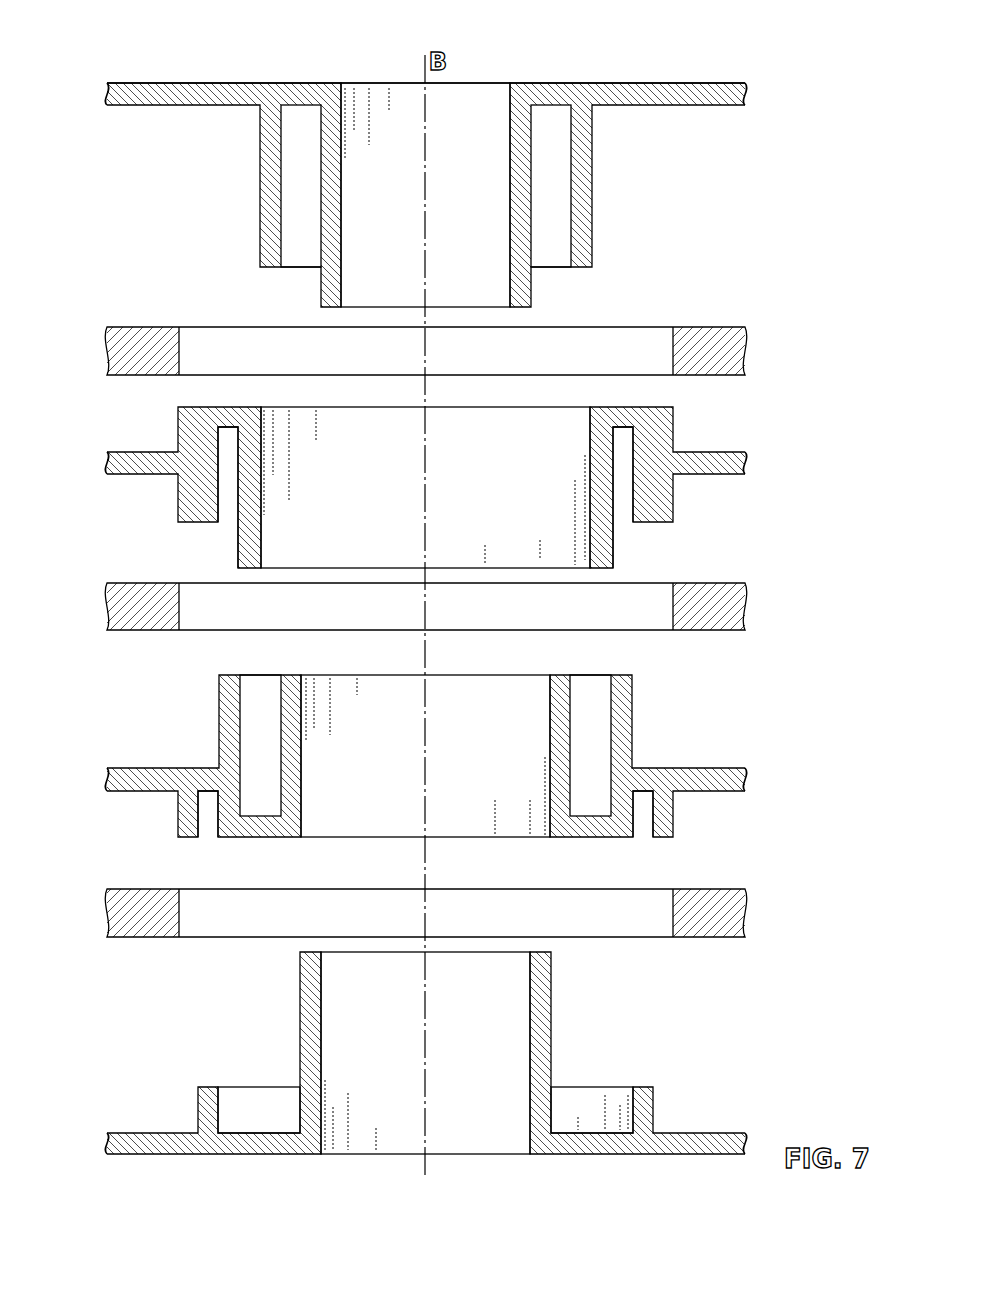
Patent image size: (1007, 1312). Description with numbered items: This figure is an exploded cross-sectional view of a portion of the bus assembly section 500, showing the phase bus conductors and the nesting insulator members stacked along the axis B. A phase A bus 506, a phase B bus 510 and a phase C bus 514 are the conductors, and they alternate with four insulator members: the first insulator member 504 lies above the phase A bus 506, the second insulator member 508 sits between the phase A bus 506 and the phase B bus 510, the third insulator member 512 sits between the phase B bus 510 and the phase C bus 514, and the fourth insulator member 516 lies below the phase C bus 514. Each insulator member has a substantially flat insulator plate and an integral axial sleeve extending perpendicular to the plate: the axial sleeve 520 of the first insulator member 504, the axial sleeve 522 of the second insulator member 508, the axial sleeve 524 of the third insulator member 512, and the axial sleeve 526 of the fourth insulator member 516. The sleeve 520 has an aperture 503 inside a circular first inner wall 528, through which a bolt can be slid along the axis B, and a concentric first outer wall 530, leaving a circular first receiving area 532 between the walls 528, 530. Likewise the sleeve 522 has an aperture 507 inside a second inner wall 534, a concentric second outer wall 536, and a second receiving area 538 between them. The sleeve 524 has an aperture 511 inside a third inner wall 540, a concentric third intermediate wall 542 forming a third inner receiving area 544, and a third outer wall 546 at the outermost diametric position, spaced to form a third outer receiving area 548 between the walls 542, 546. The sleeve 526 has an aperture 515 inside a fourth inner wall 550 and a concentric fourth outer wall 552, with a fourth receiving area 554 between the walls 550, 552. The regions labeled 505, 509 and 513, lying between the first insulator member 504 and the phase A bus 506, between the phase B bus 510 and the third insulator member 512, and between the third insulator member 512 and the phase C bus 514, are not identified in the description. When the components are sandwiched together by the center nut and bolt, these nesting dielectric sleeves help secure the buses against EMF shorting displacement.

The bus assembly section 500 is at (130, 46).
The aperture 503 is at (460, 108).
The first insulator member 504 is at (740, 93).
The gap 505 is at (622, 345).
The phase A bus 506 is at (740, 350).
The aperture 507 is at (462, 481).
The second insulator member 508 is at (742, 462).
The gap 509 is at (380, 615).
The phase B bus 510 is at (735, 603).
The aperture 511 is at (462, 771).
The third insulator member 512 is at (732, 778).
The gap 513 is at (357, 903).
The phase C bus 514 is at (710, 920).
The aperture 515 is at (462, 1091).
The fourth insulator member 516 is at (700, 1142).
The axial sleeve 520 is at (257, 163).
The axial sleeve 522 is at (168, 422).
The axial sleeve 524 is at (212, 686).
The axial sleeve 526 is at (188, 1091).
The first inner wall 528 is at (328, 230).
The first outer circular wall 530 is at (265, 192).
The first receiving area 532 is at (292, 125).
The second inner wall 534 is at (252, 535).
The second outer wall 536 is at (188, 515).
The second receiving area 538 is at (228, 517).
The third inner wall 540 is at (290, 744).
The third intermediate wall 542 is at (228, 722).
The third inner receiving area 544 is at (268, 784).
The third outer wall 546 is at (180, 820).
The third outer receiving area 548 is at (212, 827).
The fourth inner wall 550 is at (312, 1013).
The fourth outer wall 552 is at (208, 1092).
The fourth receiving area 554 is at (247, 1095).